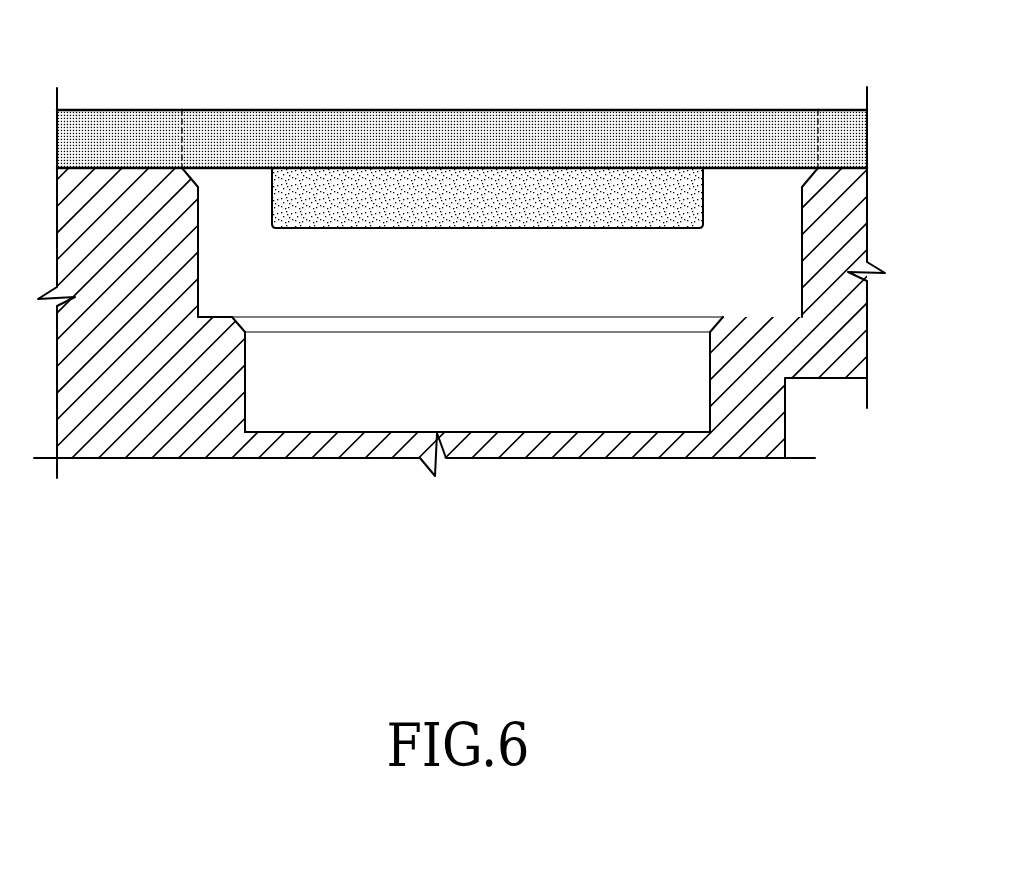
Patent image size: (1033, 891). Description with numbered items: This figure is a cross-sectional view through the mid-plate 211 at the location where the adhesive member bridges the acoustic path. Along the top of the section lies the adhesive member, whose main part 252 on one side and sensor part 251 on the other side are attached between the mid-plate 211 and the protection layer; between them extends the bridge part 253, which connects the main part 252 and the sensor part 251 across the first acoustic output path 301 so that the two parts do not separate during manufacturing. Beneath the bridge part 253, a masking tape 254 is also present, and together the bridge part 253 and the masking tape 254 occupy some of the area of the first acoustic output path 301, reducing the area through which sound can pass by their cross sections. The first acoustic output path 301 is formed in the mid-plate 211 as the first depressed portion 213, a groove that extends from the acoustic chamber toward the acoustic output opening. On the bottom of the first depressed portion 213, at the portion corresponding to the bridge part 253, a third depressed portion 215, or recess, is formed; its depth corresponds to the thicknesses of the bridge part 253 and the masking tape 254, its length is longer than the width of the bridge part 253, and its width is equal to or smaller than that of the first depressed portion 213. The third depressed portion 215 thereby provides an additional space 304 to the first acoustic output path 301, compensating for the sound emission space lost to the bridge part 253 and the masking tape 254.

The mid-plate 211 is at (843, 210).
The first depressed portion 213 is at (217, 315).
The third depressed portion 215 is at (535, 432).
The sensor part 251 is at (838, 128).
The main part 252 is at (115, 120).
The bridge part 253 is at (482, 128).
The masking tape 254 is at (568, 203).
The first acoustic output path 301 is at (731, 244).
The additional space 304 is at (621, 377).